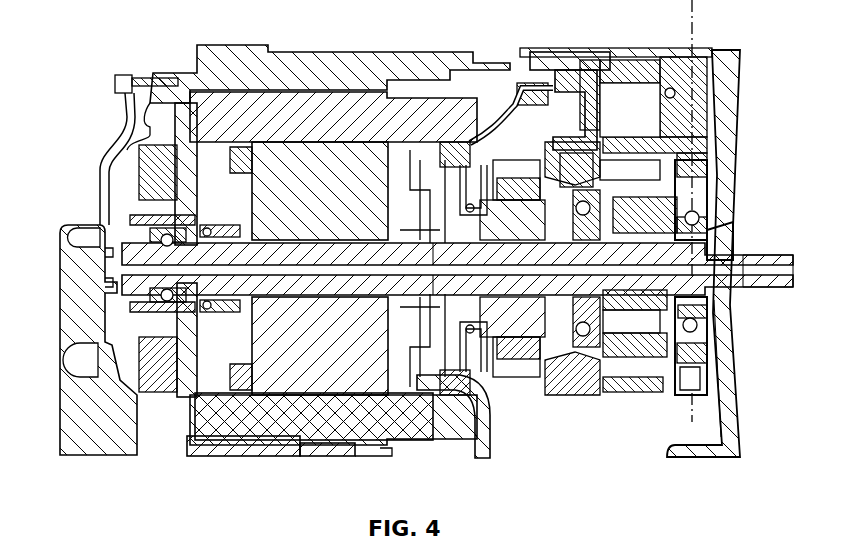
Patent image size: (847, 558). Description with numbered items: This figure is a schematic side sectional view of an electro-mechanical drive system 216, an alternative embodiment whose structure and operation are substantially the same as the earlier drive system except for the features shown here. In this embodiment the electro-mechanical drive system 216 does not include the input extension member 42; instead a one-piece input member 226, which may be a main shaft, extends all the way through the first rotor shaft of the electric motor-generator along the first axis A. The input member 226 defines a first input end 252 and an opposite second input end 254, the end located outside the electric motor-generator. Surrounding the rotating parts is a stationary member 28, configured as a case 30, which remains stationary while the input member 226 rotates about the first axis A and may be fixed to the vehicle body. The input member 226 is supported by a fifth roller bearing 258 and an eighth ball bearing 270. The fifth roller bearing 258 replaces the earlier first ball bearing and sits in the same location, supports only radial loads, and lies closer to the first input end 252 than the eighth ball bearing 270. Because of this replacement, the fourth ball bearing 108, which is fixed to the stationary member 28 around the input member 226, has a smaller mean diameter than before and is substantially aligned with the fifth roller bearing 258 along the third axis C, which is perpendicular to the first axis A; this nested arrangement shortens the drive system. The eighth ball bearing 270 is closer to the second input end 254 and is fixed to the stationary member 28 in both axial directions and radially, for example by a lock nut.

The electro-mechanical drive system 216 is at (113, 68).
The input extension member 42 is at (357, 243).
The eighth ball bearing 270 is at (125, 215).
The second input end 254 is at (110, 290).
The fourth ball bearing 108 is at (715, 195).
The fifth roller bearing 258 is at (737, 212).
The input member 226 is at (745, 262).
The first input end 252 is at (795, 284).
The case 30 is at (735, 385).
The stationary member 28 is at (737, 422).
The first axis A is at (822, 268).
The third axis C is at (688, 403).